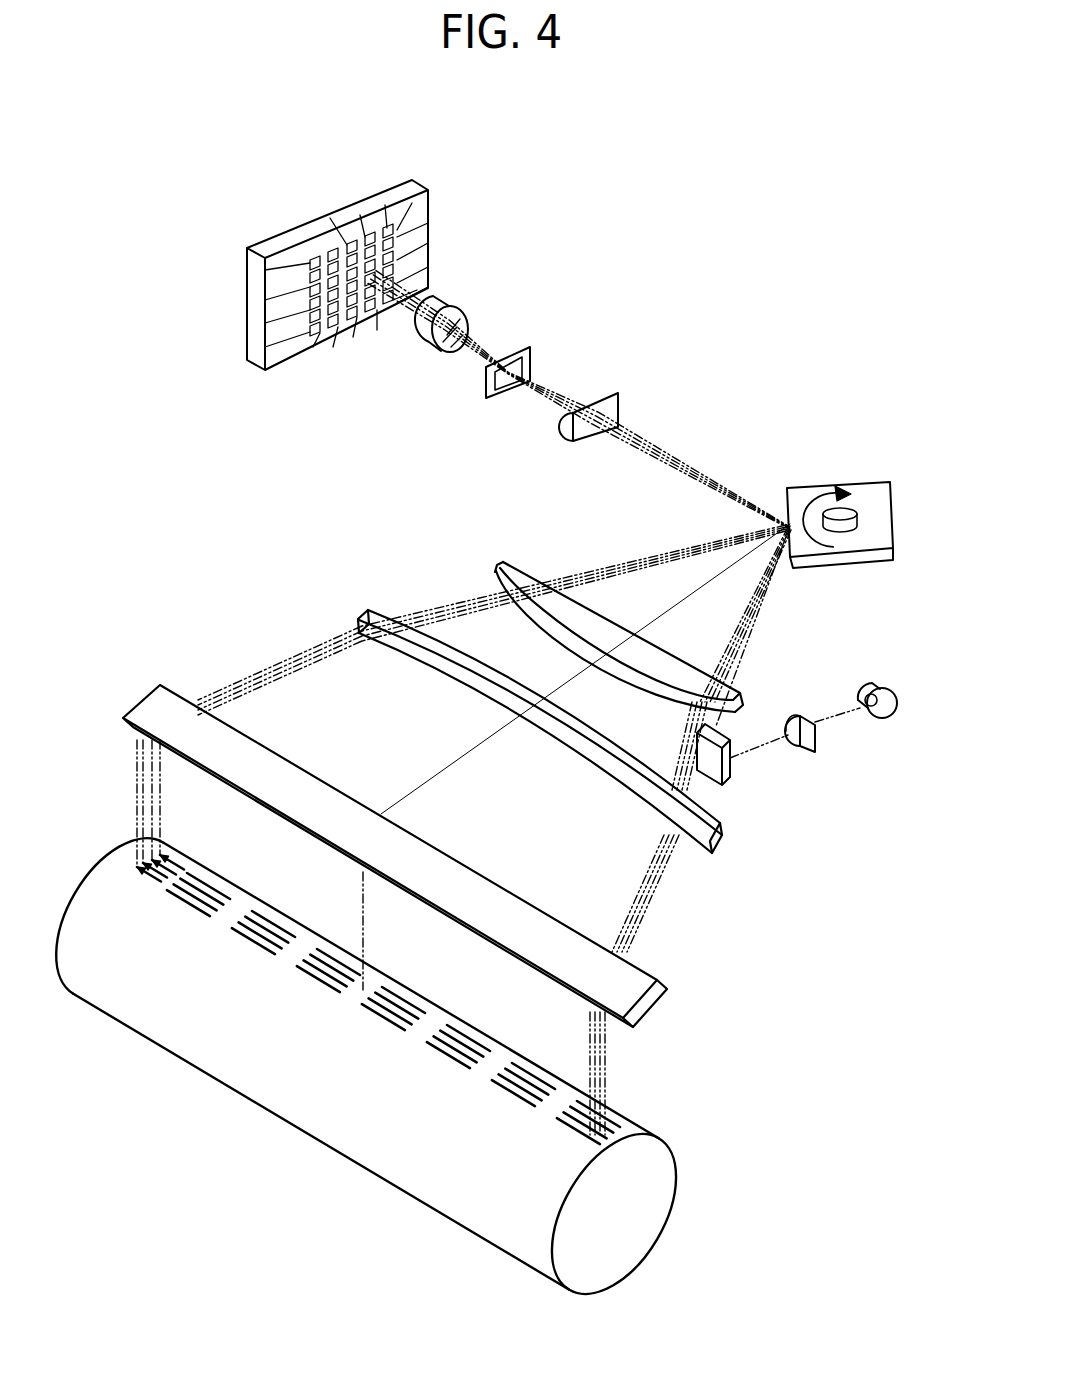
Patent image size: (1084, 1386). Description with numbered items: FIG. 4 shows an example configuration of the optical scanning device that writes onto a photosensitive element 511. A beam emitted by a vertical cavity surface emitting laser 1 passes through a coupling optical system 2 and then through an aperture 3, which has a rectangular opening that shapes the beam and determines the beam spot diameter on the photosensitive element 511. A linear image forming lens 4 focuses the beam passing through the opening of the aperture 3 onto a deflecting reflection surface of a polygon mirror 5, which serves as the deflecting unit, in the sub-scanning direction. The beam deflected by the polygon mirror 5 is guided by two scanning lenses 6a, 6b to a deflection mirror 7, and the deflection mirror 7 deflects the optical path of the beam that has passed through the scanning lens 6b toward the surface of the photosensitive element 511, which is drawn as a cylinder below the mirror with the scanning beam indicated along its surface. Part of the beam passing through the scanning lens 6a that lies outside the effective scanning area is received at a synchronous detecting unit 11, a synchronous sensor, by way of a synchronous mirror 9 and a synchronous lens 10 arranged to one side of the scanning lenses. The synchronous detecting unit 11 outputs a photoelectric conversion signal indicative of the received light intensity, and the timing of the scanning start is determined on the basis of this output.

The vertical cavity surface emitting laser 1 is at (430, 210).
The coupling optical system 2 is at (473, 318).
The aperture 3 is at (532, 363).
The linear image forming lens 4 is at (620, 404).
The polygon mirror 5 is at (893, 514).
The scanning lens 6a is at (508, 564).
The scanning lens 6b is at (372, 612).
The deflection mirror 7 is at (165, 687).
The synchronous mirror 9 is at (731, 770).
The synchronous lens 10 is at (818, 747).
The synchronous detecting unit 11 is at (896, 711).
The photosensitive element 511 is at (677, 1176).